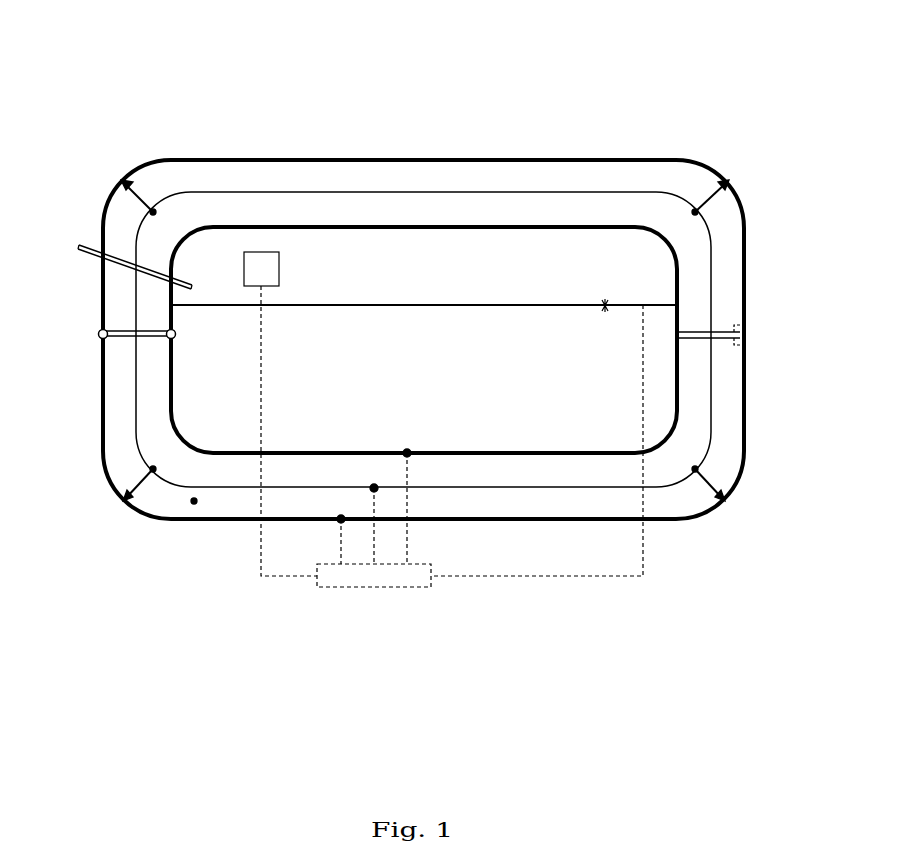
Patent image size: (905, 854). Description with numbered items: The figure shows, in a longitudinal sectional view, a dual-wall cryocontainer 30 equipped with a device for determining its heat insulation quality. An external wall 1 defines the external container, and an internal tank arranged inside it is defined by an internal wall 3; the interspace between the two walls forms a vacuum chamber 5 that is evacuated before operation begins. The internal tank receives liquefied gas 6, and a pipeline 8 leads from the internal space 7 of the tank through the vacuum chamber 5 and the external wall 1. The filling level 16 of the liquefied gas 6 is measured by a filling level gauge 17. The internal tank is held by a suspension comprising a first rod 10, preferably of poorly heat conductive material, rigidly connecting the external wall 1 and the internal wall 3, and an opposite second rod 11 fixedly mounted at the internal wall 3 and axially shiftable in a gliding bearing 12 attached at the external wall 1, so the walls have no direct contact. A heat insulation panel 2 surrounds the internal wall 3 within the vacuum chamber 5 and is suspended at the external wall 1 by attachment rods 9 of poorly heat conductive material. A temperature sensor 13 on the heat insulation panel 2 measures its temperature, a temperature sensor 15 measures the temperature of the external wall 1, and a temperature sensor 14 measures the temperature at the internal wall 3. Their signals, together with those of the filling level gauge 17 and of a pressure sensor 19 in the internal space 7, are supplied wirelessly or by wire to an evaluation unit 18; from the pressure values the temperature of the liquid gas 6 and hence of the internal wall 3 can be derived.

The external wall 1 is at (678, 158).
The heat insulation panel 2 is at (364, 191).
The internal wall 3 is at (529, 226).
The vacuum chamber 5 is at (194, 501).
The liquefied gas 6 is at (386, 393).
The internal space 7 is at (433, 284).
The pipeline 8 is at (90, 240).
The attachment rods 9 is at (136, 196).
The first rod 10 is at (128, 340).
The second rod 11 is at (723, 328).
The gliding bearing 12 is at (744, 355).
The temperature sensor 13 is at (374, 488).
The temperature sensor 14 is at (407, 453).
The temperature sensor 15 is at (341, 519).
The filling level 16 is at (521, 304).
The filling level gauge 17 is at (603, 299).
The evaluation unit 18 is at (369, 576).
The pressure sensor 19 is at (270, 251).
The cryocontainer 30 is at (650, 100).